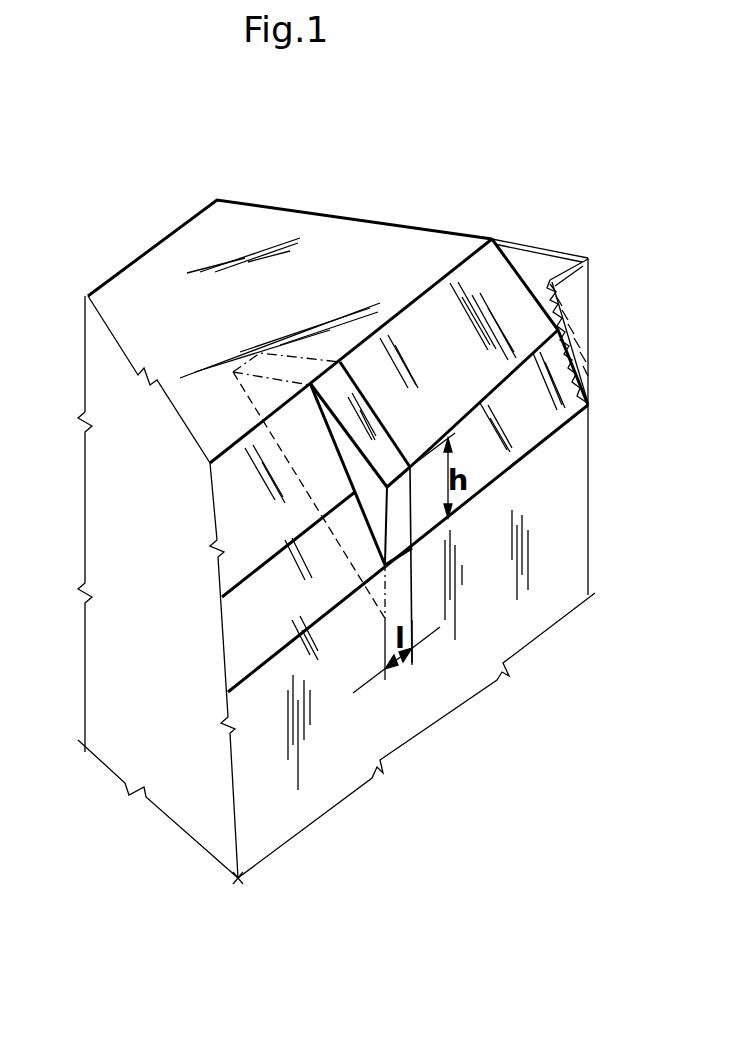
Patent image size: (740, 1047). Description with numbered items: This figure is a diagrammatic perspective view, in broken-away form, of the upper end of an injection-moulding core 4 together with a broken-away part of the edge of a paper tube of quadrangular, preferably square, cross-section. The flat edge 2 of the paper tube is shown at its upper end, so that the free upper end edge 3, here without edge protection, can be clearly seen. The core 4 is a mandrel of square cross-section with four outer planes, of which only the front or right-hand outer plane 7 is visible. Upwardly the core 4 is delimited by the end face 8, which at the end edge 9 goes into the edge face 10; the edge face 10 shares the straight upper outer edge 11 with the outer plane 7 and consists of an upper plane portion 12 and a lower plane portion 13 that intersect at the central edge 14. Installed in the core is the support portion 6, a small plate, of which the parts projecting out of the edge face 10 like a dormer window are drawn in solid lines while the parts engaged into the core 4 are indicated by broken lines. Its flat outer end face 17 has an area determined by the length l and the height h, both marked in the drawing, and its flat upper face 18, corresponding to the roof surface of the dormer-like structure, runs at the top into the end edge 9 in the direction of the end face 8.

The flat edge of the paper tube 2 is at (533, 270).
The free upper end edge 3 is at (577, 268).
The injection-moulding core 4 is at (590, 533).
The support portion 6 is at (322, 442).
The outer plane 7 is at (320, 747).
The end face 8 is at (205, 258).
The end edge 9 is at (430, 285).
The edge face 10 is at (233, 560).
The straight upper outer edge 11 is at (532, 458).
The upper plane portion 12 is at (483, 317).
The lower plane portion 13 is at (537, 410).
The central edge 14 is at (513, 368).
The flat outer end face 17 is at (402, 545).
The upper face of the support portion 18 is at (336, 380).